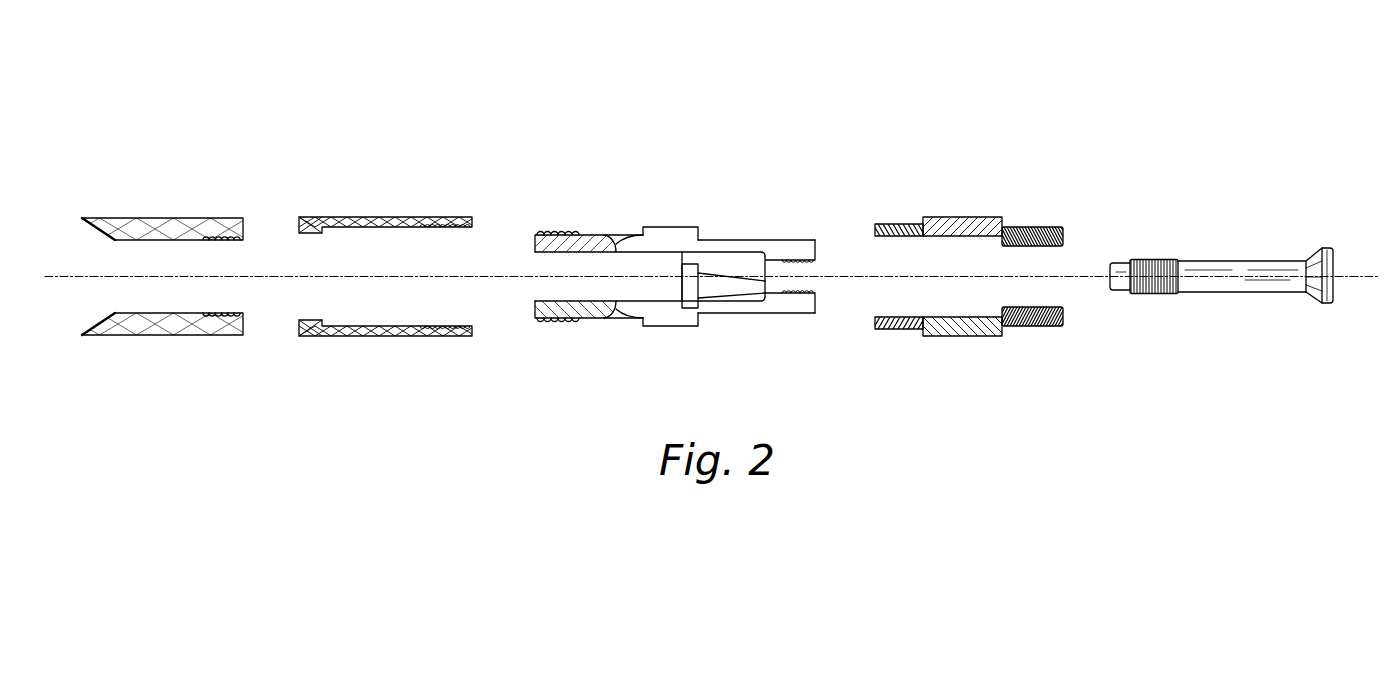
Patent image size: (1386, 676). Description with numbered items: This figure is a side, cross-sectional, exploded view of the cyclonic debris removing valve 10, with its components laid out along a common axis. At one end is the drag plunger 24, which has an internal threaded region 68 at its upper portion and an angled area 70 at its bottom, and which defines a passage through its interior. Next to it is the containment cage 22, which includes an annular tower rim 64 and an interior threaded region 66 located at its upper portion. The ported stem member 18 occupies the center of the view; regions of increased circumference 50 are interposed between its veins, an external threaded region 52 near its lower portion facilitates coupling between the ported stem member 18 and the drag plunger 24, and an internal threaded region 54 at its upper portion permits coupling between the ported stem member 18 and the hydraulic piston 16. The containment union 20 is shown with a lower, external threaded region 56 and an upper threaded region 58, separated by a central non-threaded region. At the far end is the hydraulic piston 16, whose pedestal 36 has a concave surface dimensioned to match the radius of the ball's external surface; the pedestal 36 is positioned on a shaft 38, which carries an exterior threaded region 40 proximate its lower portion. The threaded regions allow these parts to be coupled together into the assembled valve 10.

The cyclonic debris removing valve 10 is at (650, 89).
The hydraulic piston 16 is at (1273, 209).
The ported stem member 18 is at (714, 188).
The containment union 20 is at (968, 178).
The containment cage 22 is at (385, 216).
The drag plunger 24 is at (160, 217).
The pedestal 36 is at (1327, 304).
The shaft 38 is at (1237, 261).
The exterior threaded region 40 is at (1153, 295).
The regions of increased circumference 50 is at (671, 227).
The external threaded region 52 is at (560, 321).
The internal threaded region 54 is at (803, 293).
The lower external threaded region 56 is at (895, 331).
The upper threaded region 58 is at (1041, 328).
The tower rim 64 is at (303, 229).
The interior threaded region 66 is at (462, 326).
The internal threaded region 68 is at (232, 312).
The angled area 70 is at (92, 327).